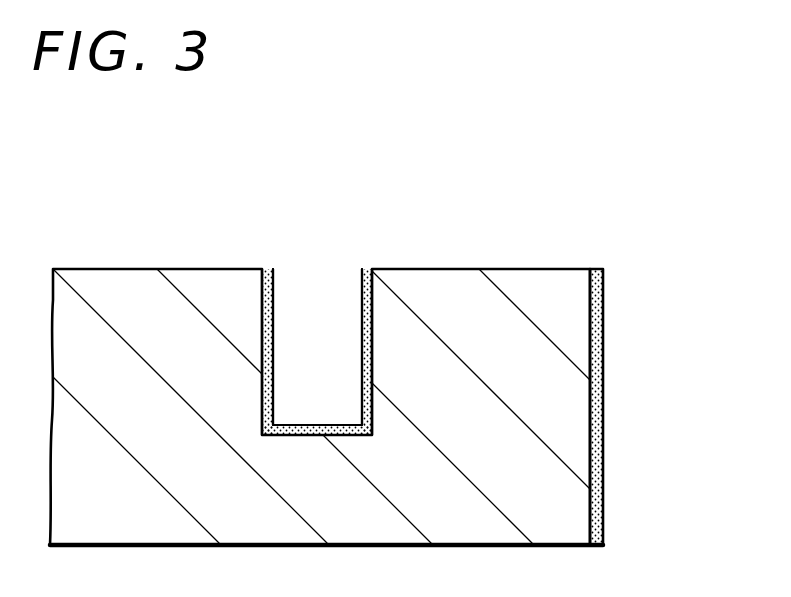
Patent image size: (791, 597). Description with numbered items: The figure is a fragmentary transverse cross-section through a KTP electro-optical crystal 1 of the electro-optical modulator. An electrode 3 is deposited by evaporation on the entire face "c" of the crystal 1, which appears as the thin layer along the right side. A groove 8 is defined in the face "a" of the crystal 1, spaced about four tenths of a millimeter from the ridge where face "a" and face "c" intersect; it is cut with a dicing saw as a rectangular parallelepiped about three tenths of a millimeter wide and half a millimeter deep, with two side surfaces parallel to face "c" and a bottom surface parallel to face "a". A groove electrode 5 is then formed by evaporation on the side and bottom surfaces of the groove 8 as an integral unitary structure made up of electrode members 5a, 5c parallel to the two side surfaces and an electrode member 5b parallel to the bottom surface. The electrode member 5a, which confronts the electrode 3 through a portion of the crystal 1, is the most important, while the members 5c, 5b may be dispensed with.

The electro-optical crystal 1 is at (468, 305).
The electrode 3 is at (603, 365).
The groove electrode 5 is at (221, 180).
The electrode member 5a is at (359, 307).
The electrode member 5b is at (317, 425).
The electrode member 5c is at (277, 307).
The groove 8 is at (320, 307).